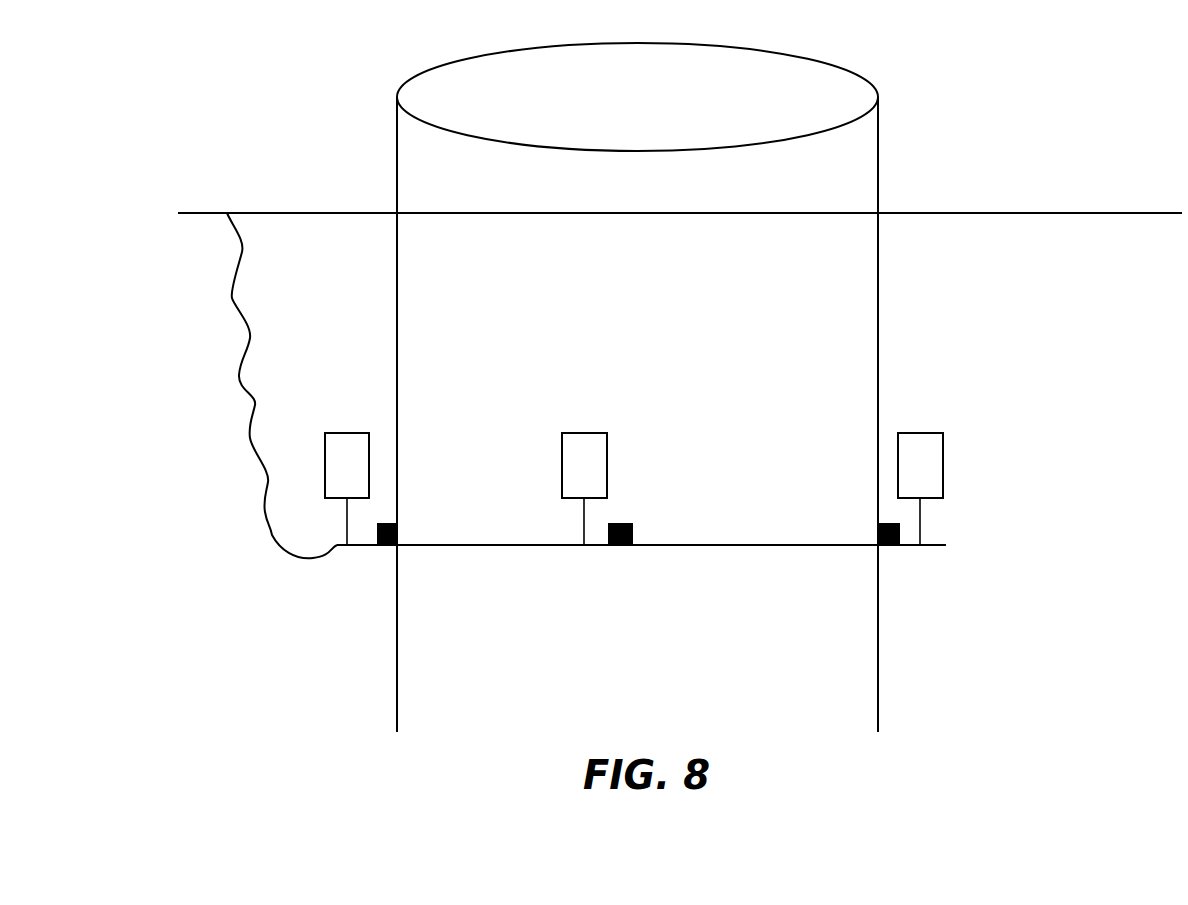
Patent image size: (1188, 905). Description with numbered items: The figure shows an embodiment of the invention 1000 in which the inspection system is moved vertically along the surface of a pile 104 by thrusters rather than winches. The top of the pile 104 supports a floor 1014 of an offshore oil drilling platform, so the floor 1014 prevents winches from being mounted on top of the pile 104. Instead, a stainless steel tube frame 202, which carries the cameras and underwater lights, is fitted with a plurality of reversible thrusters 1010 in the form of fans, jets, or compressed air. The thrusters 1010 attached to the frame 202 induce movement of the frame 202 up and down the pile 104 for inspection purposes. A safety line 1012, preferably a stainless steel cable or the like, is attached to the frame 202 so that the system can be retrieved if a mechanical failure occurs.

The pile 104 is at (878, 177).
The floor 1014 is at (1055, 214).
The safety line 1012 is at (239, 375).
The frame 202 is at (481, 548).
The thrusters 1010 is at (352, 433).
The invention 1000 is at (252, 608).